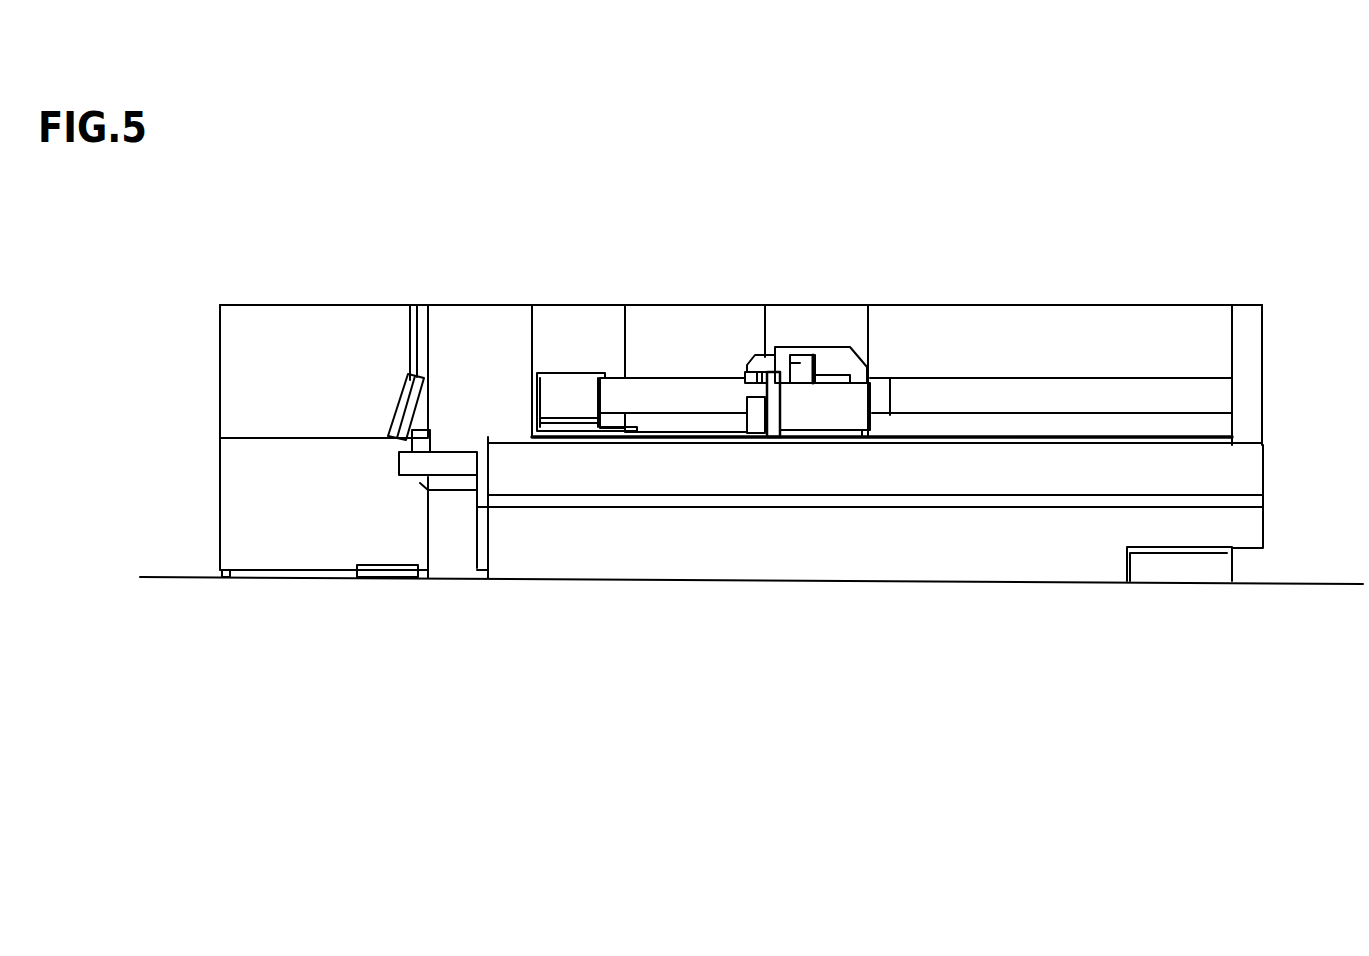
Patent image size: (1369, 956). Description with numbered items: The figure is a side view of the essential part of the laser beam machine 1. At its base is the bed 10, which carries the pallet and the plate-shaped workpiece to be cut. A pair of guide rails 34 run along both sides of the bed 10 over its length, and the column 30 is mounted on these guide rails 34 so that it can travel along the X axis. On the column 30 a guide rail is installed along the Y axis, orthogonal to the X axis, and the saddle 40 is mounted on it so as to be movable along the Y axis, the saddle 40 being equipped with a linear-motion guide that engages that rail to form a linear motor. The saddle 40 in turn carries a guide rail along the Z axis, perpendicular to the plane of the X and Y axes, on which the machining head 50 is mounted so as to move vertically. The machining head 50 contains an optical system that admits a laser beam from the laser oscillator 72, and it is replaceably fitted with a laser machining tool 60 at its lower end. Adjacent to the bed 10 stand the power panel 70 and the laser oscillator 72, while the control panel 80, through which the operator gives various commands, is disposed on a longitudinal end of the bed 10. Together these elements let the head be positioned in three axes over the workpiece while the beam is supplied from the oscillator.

The laser beam machine 1 is at (1056, 272).
The bed 10 is at (838, 545).
The column 30 is at (862, 398).
The guide rails 34 is at (965, 445).
The saddle 40 is at (828, 357).
The machining head 50 is at (745, 393).
The laser machining tool 60 is at (750, 440).
The power panel 70 is at (265, 318).
The laser oscillator 72 is at (785, 315).
The control panel 80 is at (409, 378).